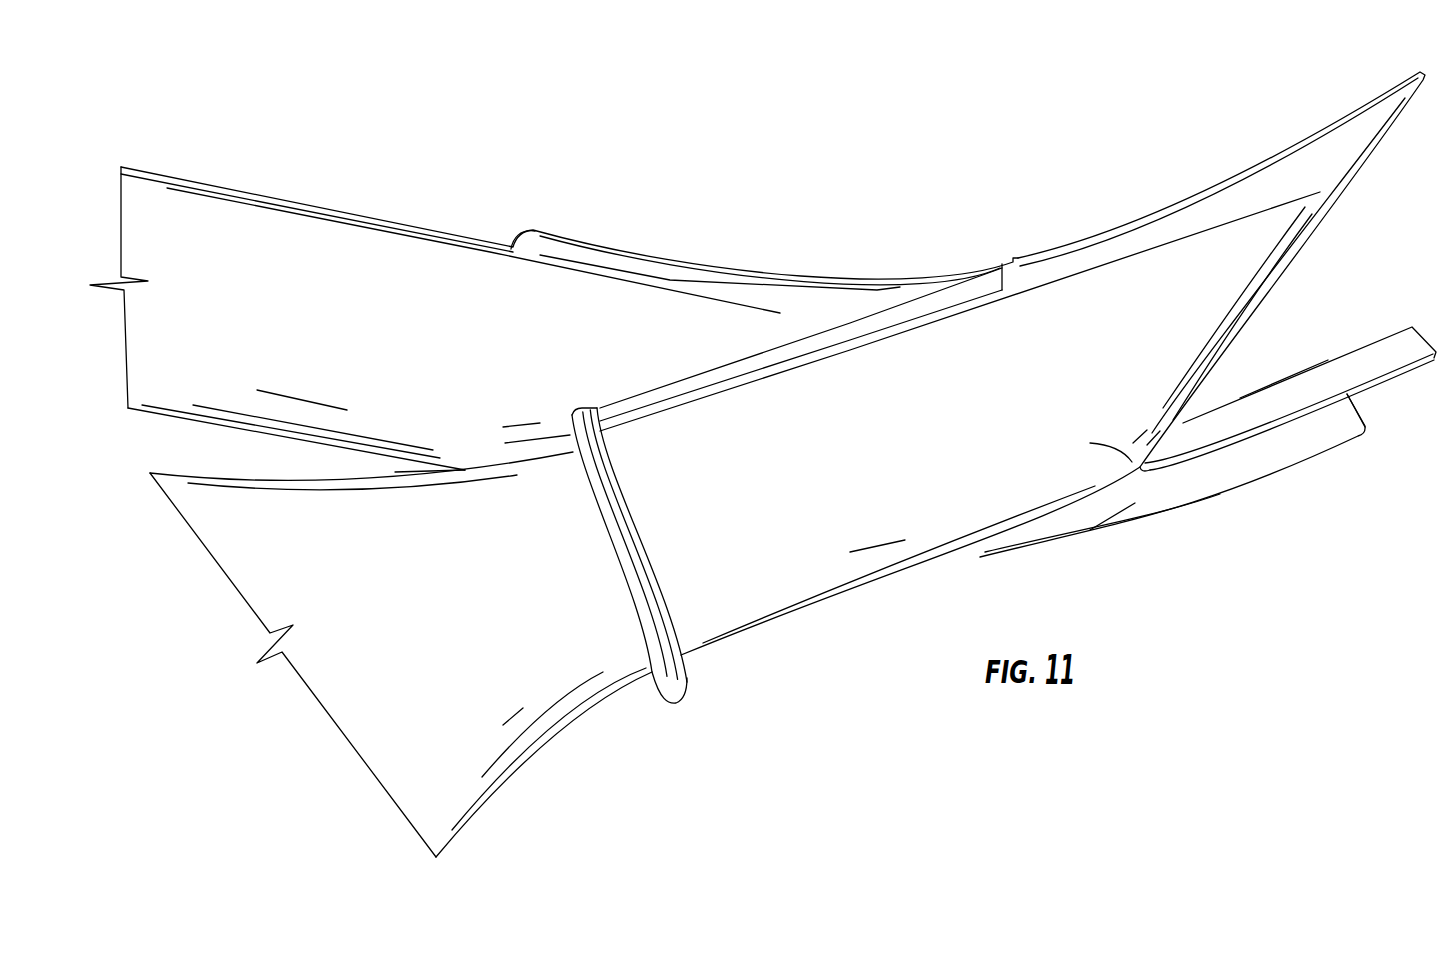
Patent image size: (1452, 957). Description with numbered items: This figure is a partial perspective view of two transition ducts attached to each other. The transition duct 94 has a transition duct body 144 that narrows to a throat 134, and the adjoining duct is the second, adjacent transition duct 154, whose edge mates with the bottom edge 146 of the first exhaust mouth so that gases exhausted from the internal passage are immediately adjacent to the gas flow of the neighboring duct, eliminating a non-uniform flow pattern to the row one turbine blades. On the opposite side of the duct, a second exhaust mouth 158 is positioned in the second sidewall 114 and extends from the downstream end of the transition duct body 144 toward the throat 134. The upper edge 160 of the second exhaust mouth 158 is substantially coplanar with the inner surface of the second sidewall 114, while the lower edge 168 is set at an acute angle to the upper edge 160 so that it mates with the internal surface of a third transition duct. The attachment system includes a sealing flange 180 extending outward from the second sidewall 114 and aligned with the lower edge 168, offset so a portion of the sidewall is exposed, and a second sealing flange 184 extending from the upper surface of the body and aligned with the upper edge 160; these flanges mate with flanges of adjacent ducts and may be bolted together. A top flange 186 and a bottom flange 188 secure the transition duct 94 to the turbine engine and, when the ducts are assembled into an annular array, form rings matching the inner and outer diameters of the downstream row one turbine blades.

The transition duct body 144 is at (260, 237).
The top flange 186 is at (395, 472).
The second, adjacent transition duct 154 is at (517, 297).
The bottom flange 188 is at (680, 277).
The lower edge 168 is at (785, 352).
The bottom edge 146 is at (833, 353).
The transition duct 94 is at (915, 360).
The second sidewall 114 is at (955, 440).
The throat 134 is at (673, 607).
The sealing flange 180 is at (1347, 197).
The sealing flange 184 is at (1357, 358).
The upper edge 160 is at (1303, 373).
The second exhaust mouth 158 is at (1253, 352).